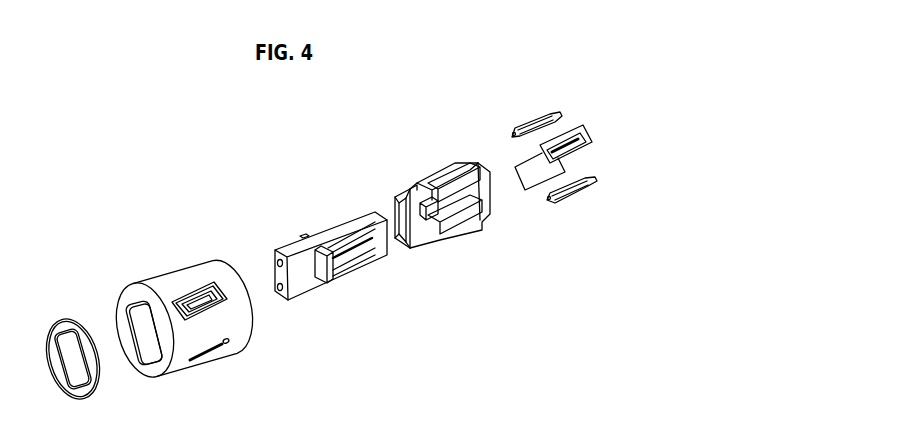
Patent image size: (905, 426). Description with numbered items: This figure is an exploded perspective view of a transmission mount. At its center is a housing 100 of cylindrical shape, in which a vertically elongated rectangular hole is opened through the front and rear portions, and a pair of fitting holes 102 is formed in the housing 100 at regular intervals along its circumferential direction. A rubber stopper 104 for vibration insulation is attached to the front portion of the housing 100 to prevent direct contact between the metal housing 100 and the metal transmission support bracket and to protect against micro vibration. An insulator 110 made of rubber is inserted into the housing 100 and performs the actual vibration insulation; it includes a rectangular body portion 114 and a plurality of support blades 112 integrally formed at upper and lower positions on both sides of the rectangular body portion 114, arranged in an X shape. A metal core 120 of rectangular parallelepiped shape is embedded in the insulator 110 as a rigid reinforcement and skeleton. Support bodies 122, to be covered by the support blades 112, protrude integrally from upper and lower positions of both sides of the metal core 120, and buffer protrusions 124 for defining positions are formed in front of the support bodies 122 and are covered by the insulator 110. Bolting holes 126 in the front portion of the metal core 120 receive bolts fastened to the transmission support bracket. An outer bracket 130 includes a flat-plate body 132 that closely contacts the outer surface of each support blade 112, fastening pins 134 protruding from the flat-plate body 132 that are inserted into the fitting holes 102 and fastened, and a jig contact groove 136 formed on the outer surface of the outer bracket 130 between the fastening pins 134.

The housing 100 is at (165, 270).
The fitting holes 102 is at (212, 288).
The rubber stopper 104 is at (52, 333).
The insulator 110 is at (420, 170).
The support blades 112 is at (464, 194).
The rectangular body portion 114 is at (418, 240).
The metal core 120 is at (344, 216).
The support bodies 122 is at (352, 246).
The buffer protrusions 124 is at (318, 262).
The bolting holes 126 is at (277, 268).
The outer bracket 130 is at (532, 188).
The flat-plate body 132 is at (540, 147).
The fastening pins 134 is at (563, 137).
The jig contact groove 136 is at (585, 128).